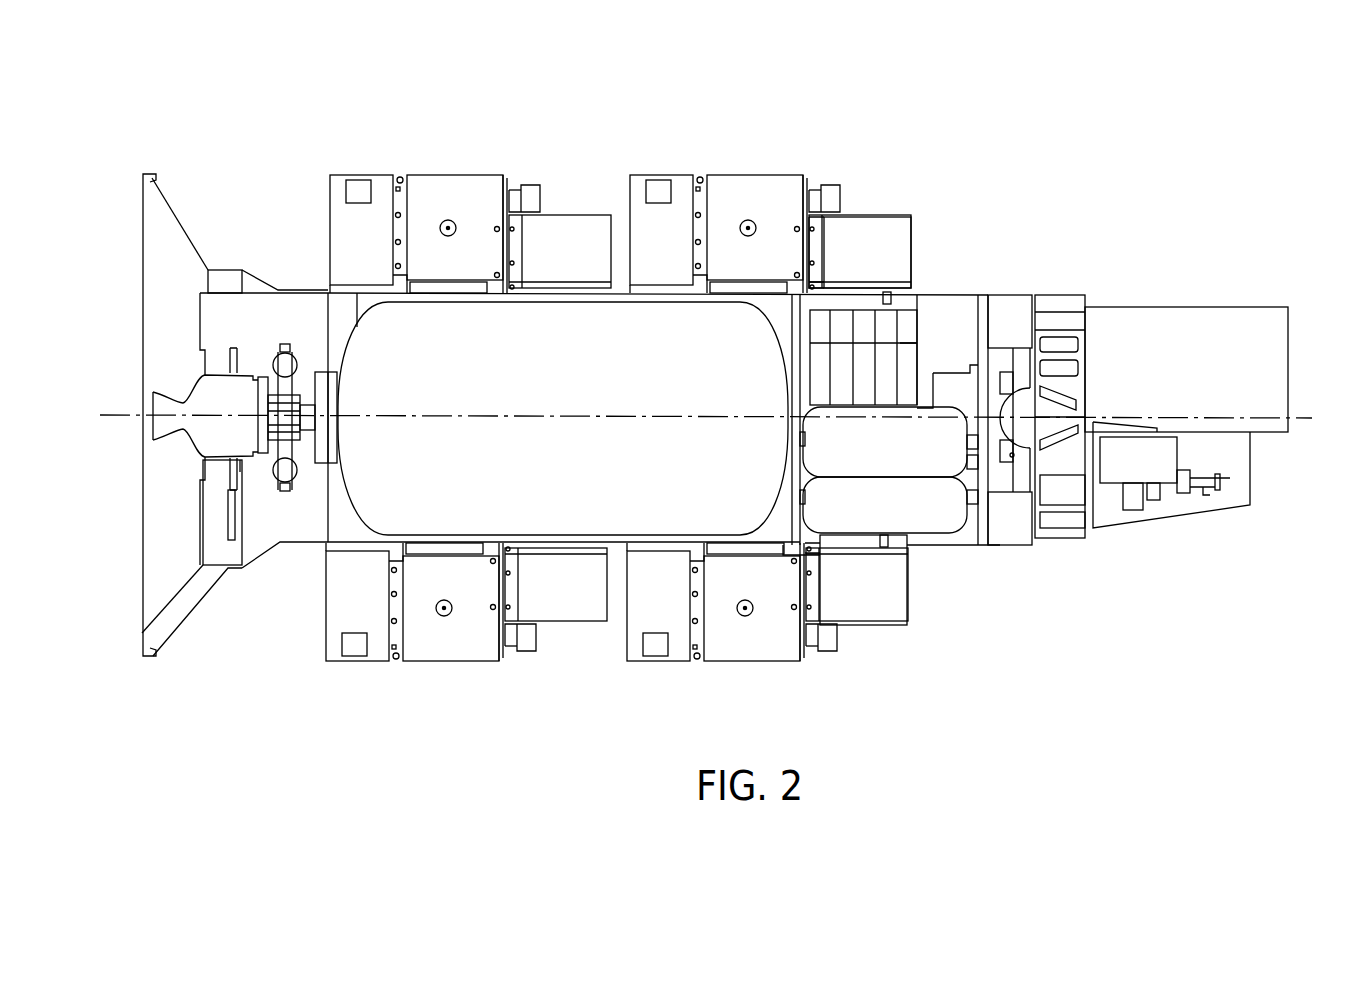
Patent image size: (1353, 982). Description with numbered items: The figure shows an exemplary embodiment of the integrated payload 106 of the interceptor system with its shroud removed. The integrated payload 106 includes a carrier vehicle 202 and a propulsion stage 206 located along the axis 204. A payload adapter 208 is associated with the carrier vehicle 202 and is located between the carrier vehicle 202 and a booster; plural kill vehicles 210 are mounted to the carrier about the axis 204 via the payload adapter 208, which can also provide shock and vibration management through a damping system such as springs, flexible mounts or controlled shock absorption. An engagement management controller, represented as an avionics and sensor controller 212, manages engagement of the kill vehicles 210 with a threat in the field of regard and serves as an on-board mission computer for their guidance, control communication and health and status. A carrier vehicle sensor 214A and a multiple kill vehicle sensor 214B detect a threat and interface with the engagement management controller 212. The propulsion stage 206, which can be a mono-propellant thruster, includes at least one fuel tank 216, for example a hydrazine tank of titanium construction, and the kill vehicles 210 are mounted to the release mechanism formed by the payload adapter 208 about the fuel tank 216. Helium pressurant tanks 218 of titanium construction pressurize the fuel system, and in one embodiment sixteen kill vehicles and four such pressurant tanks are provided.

The integrated payload 106 is at (977, 165).
The carrier vehicle 202 is at (292, 545).
The axis 204 is at (1307, 410).
The propulsion stage 206 is at (227, 357).
The payload adapter 208 is at (874, 200).
The kill vehicles 210 is at (443, 175).
The avionics and sensor controller 212 is at (910, 306).
The carrier vehicle sensor 214A is at (1164, 306).
The multiple kill vehicle sensor 214B is at (872, 643).
The fuel tank 216 is at (551, 523).
The helium pressurant tanks 218 is at (912, 526).